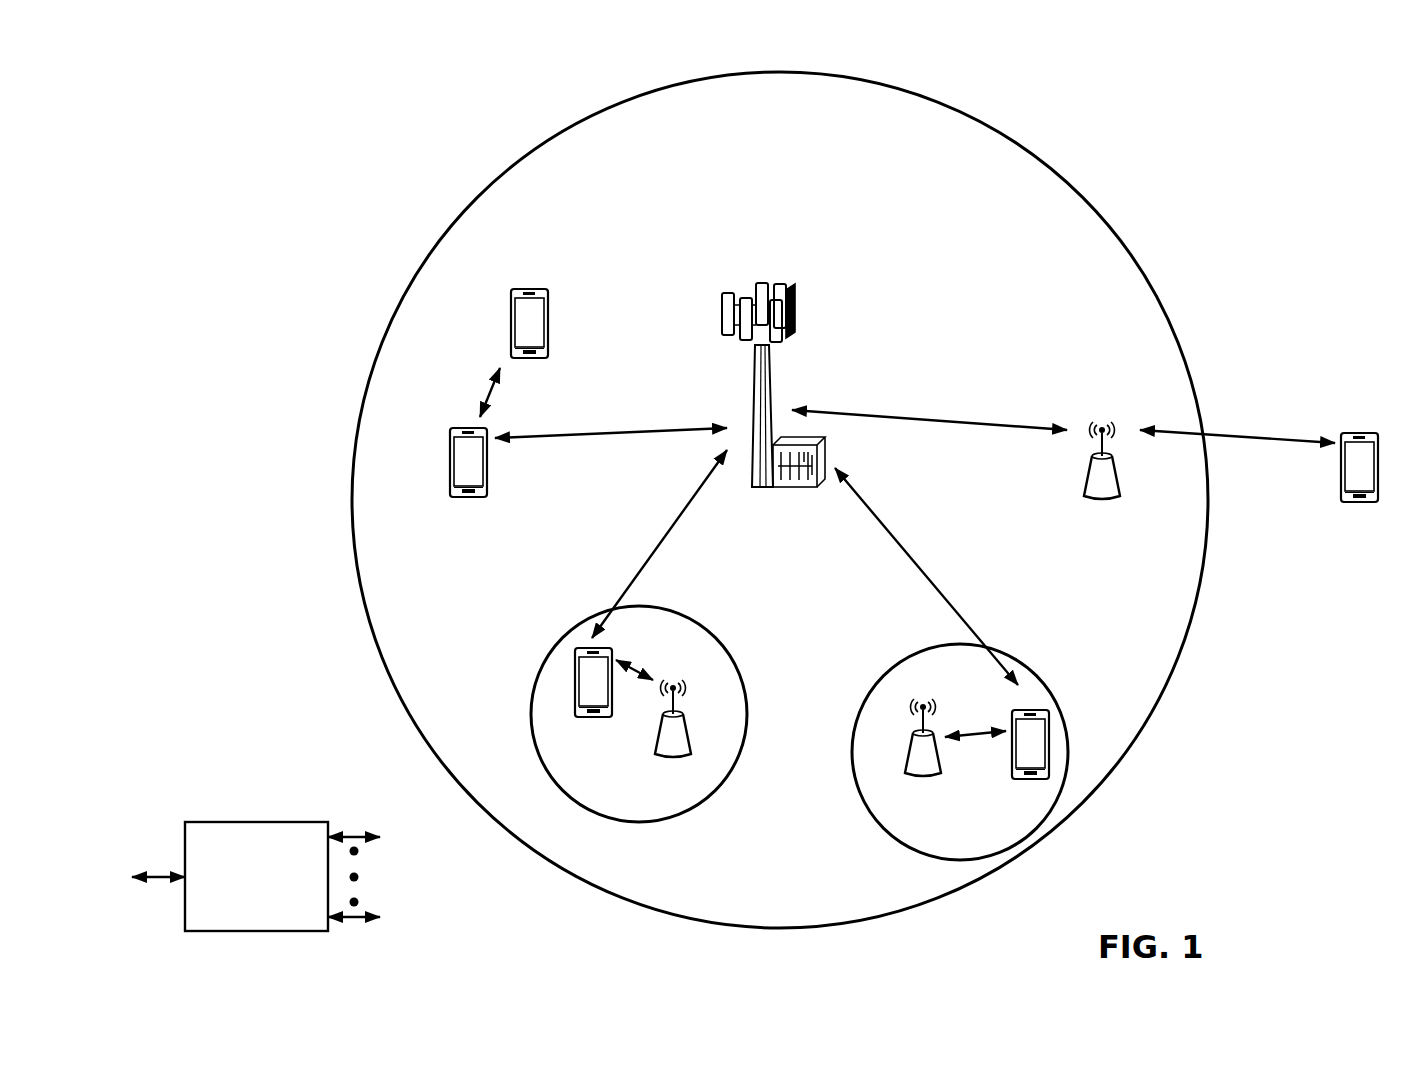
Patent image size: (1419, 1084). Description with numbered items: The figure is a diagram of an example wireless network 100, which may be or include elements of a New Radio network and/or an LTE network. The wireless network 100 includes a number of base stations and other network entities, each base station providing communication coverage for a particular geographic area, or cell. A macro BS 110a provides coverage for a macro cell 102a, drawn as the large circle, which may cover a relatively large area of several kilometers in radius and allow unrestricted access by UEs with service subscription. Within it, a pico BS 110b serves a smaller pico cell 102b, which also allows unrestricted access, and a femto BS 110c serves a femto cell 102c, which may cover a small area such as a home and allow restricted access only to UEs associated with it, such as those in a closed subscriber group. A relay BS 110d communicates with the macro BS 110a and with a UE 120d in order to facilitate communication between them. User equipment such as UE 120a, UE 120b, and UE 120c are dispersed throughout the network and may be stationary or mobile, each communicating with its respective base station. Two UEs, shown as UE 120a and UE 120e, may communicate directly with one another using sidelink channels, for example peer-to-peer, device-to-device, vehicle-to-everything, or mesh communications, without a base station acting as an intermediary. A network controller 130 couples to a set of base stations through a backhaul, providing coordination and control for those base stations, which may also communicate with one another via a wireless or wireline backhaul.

The wireless network 100 is at (240, 68).
The macro cell 102a is at (1065, 180).
The pico cell 102b is at (732, 655).
The femto cell 102c is at (895, 662).
The macro BS 110a is at (770, 278).
The pico BS 110b is at (696, 752).
The femto BS 110c is at (910, 768).
The relay BS 110d is at (1102, 420).
The UE 120a is at (449, 461).
The UE 120b is at (583, 714).
The UE 120c is at (1019, 778).
The UE 120d is at (1375, 433).
The UE 120e is at (509, 313).
The network controller 130 is at (255, 822).